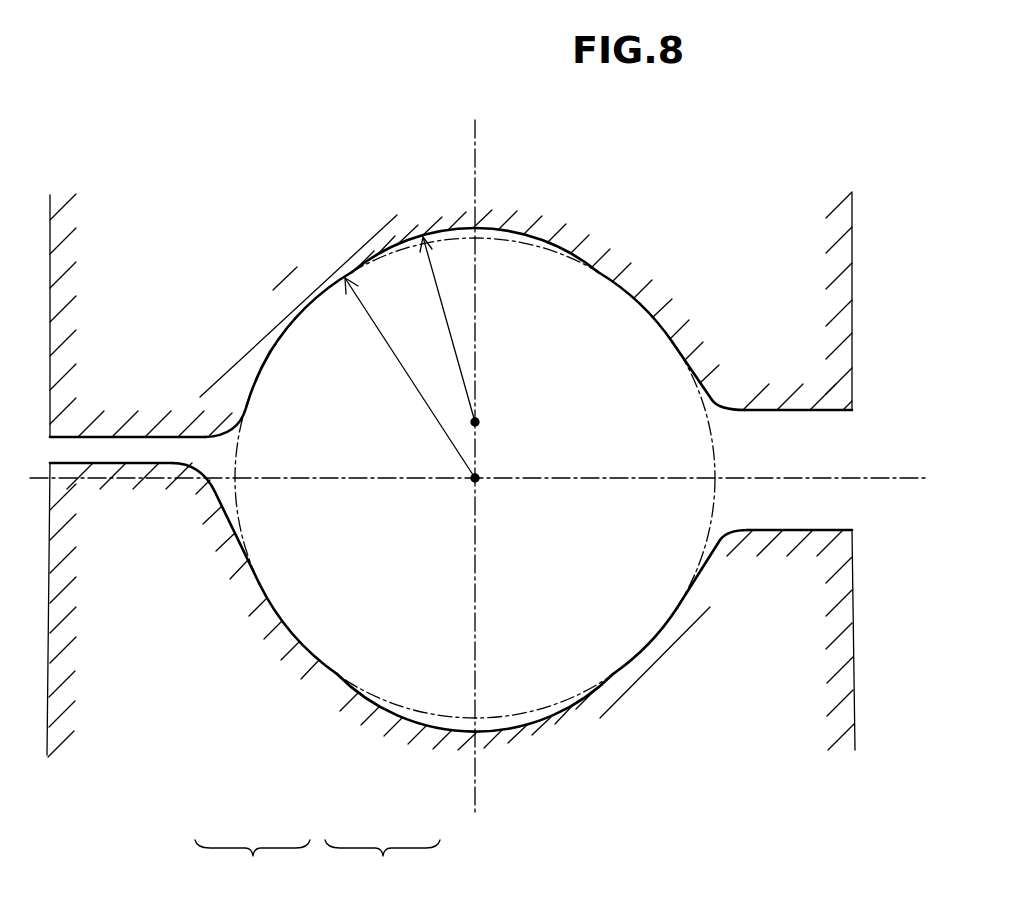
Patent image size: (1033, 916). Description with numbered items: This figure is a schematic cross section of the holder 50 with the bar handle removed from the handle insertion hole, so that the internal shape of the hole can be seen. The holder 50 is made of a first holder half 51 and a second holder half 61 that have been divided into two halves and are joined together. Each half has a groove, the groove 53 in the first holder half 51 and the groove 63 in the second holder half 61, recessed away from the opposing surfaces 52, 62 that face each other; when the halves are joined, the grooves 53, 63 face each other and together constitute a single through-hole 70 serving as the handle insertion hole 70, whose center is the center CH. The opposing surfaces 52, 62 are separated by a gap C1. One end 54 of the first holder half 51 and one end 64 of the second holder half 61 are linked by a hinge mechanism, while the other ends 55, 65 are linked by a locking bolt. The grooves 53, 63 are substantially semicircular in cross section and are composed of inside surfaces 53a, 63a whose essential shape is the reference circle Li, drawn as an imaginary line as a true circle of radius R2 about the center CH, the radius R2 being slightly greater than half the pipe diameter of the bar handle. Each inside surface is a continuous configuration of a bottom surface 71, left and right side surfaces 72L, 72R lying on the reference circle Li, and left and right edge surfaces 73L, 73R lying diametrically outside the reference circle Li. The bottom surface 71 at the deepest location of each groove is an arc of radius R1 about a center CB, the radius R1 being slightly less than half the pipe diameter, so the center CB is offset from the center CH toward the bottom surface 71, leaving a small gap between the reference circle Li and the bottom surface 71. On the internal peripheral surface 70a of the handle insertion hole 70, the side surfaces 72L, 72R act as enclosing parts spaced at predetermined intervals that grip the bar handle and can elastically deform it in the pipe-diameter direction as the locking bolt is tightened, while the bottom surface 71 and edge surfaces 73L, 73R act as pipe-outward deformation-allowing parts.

The holder 50 is at (313, 120).
The first holder half 51 is at (855, 700).
The opposing surface 52 is at (110, 462).
The groove 53 is at (393, 630).
The inside surface 53a is at (300, 612).
The one end 54 is at (106, 715).
The other end 55 is at (785, 720).
The second holder half 61 is at (853, 245).
The opposing surface 62 is at (135, 437).
The groove 63 is at (610, 445).
The inside surface 63a is at (338, 602).
The one end 64 is at (108, 220).
The other end 65 is at (790, 218).
The through-hole (handle insertion hole) 70 is at (382, 861).
The internal peripheral surface 70a is at (252, 861).
The bottom surface 71 is at (514, 240).
The left side surface 72L is at (283, 357).
The right side surface 72R is at (653, 333).
The left edge surface 73L is at (233, 420).
The right edge surface 73R is at (693, 383).
The reference circle Li is at (448, 238).
The radius of bottom surface R1 is at (445, 329).
The radius of reference circle R2 is at (410, 378).
The center of bottom surface radius CB is at (480, 421).
The center of handle insertion hole CH is at (472, 484).
The gap C1 is at (838, 443).